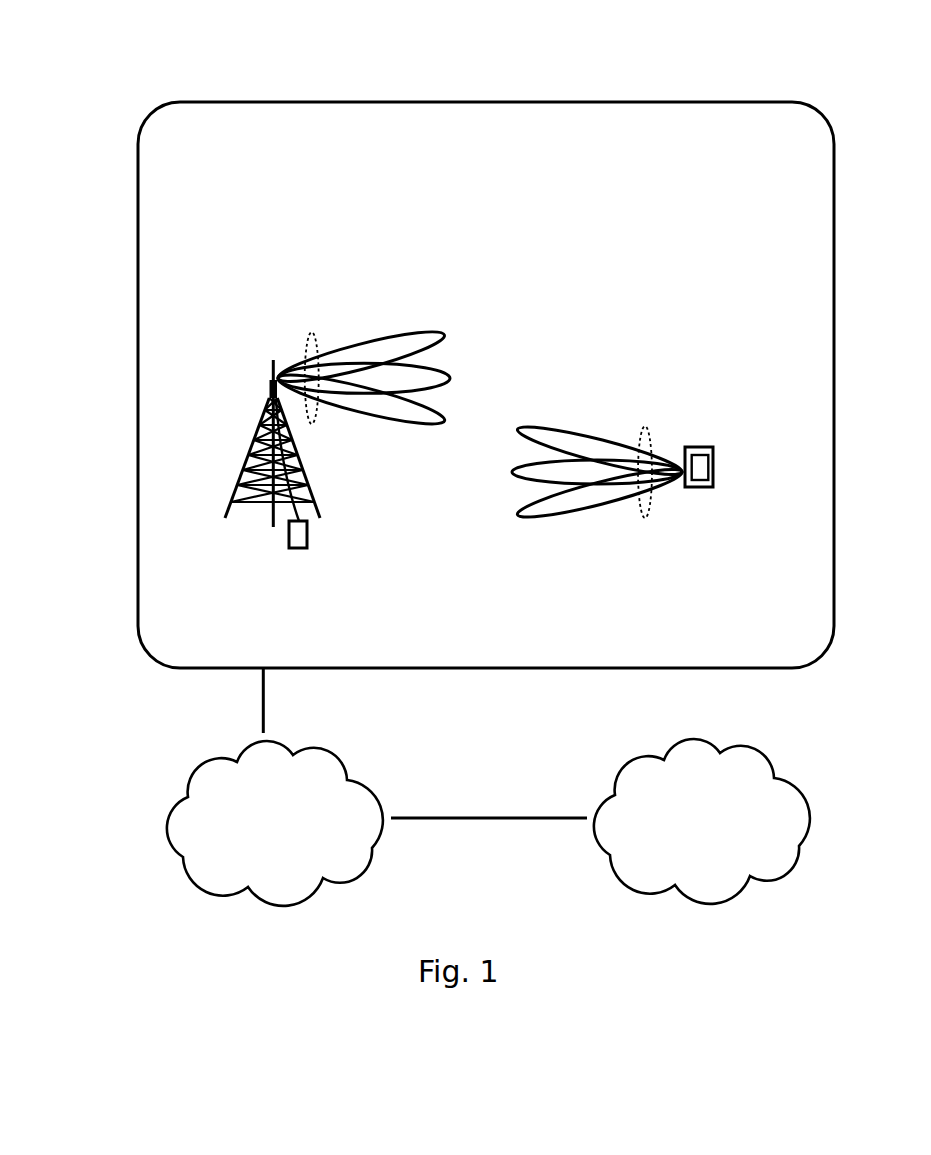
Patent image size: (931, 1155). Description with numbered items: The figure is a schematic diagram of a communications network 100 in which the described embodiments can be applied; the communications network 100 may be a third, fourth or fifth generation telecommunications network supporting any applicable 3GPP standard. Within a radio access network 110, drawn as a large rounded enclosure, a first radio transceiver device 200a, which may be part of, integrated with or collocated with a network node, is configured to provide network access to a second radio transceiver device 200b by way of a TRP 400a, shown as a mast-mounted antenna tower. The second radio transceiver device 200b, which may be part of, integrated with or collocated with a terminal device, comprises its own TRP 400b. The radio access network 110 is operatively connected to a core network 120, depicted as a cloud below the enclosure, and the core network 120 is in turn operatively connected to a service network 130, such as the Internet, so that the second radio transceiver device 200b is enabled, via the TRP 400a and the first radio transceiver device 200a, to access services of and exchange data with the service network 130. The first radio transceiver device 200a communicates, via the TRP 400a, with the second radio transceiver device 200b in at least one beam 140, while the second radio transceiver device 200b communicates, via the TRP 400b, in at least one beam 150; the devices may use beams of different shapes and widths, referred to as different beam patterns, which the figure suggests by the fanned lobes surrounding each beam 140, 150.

The communications network 100 is at (221, 69).
The radio access network 110 is at (138, 565).
The core network 120 is at (303, 838).
The service network 130 is at (730, 838).
The beam 140 is at (313, 334).
The beam 150 is at (647, 427).
The first radio transceiver device 200a is at (289, 541).
The second radio transceiver device 200b is at (702, 487).
The TRP 400a is at (268, 384).
The TRP 400b is at (713, 466).